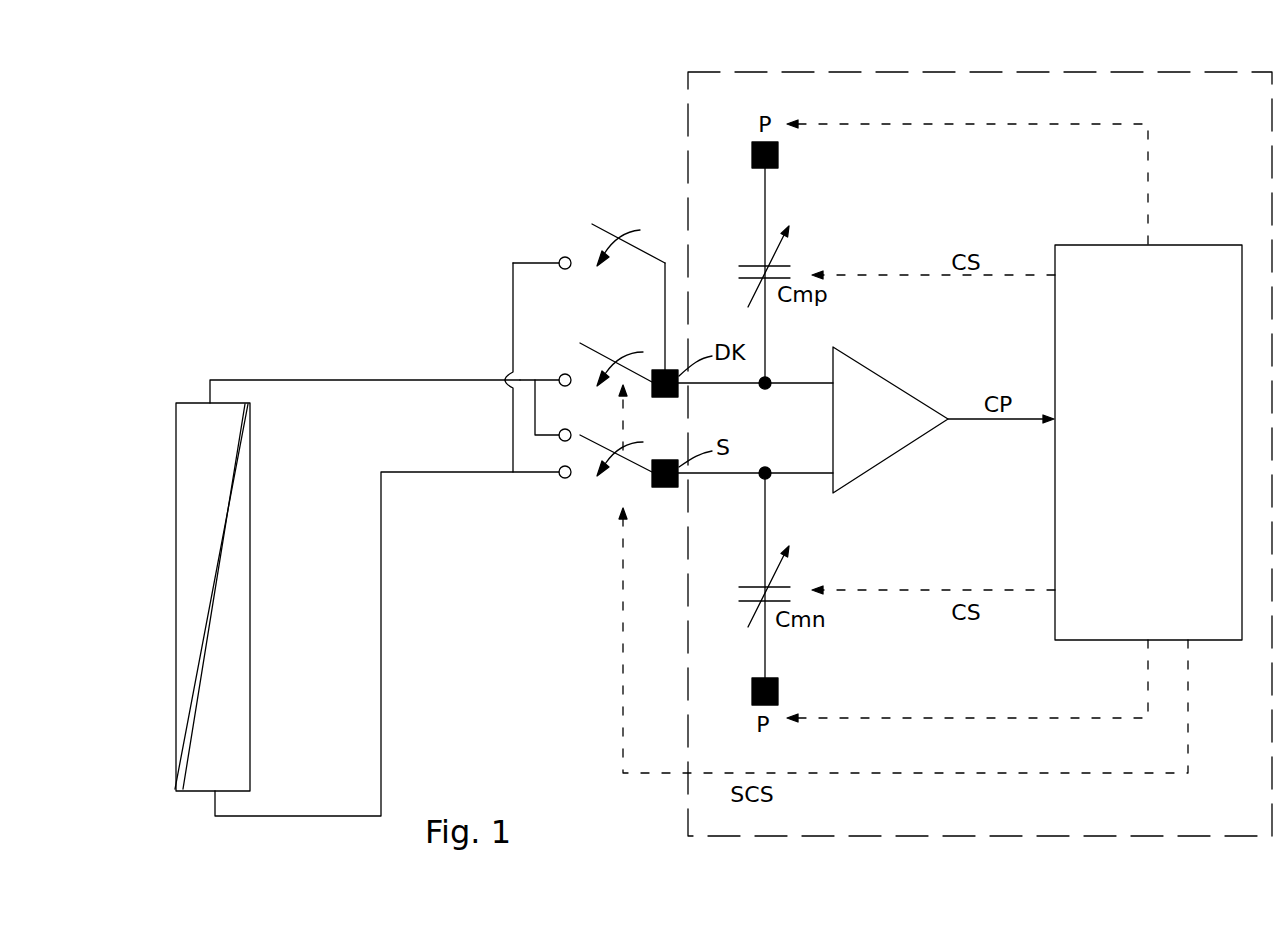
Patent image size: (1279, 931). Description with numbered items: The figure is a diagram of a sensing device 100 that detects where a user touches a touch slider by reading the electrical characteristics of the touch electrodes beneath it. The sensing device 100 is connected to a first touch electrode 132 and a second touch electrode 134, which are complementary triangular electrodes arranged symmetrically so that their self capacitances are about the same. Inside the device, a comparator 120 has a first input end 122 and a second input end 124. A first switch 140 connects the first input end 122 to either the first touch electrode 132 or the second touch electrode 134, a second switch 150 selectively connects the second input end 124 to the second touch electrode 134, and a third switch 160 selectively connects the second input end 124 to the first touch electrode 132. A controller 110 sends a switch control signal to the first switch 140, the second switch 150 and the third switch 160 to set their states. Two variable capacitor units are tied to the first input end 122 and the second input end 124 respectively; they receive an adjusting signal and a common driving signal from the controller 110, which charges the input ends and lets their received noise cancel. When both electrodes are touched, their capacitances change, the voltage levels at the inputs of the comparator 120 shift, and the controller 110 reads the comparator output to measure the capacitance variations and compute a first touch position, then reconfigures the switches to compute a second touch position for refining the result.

The sensing device 100 is at (1002, 817).
The controller 110 is at (1167, 467).
The comparator 120 is at (896, 384).
The first input end 122 is at (829, 467).
The second input end 124 is at (829, 376).
The first touch electrode 132 is at (238, 587).
The second touch electrode 134 is at (186, 527).
The first switch 140 is at (597, 436).
The second switch 150 is at (597, 346).
The third switch 160 is at (595, 222).